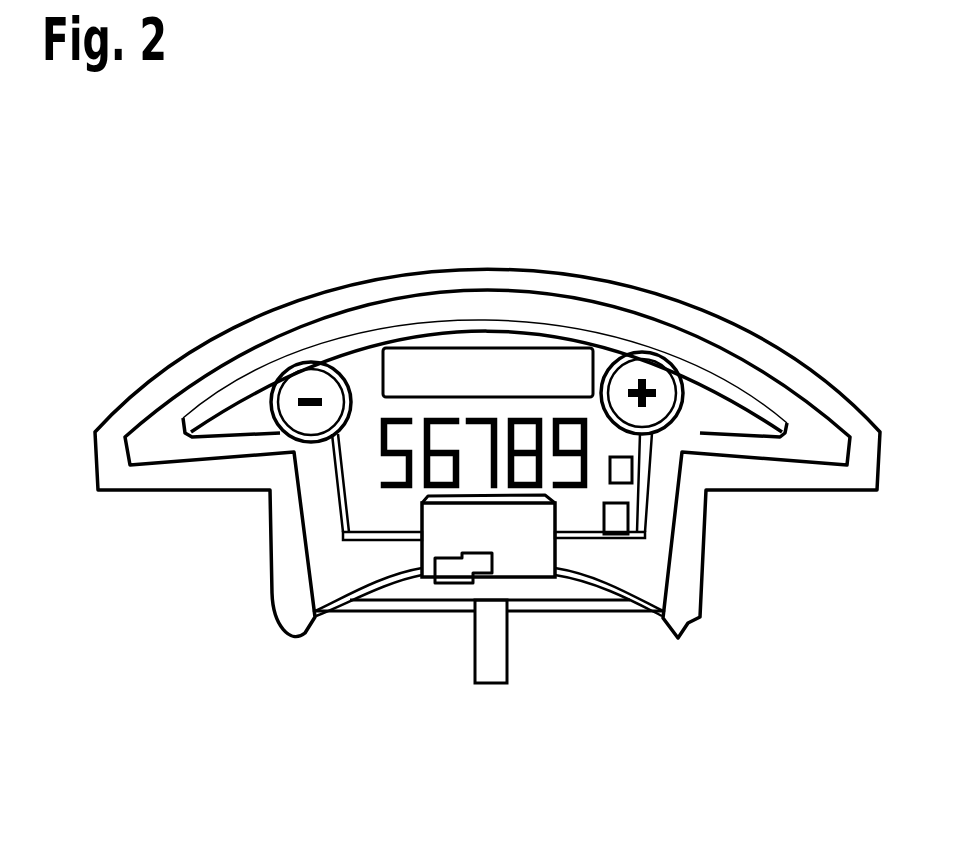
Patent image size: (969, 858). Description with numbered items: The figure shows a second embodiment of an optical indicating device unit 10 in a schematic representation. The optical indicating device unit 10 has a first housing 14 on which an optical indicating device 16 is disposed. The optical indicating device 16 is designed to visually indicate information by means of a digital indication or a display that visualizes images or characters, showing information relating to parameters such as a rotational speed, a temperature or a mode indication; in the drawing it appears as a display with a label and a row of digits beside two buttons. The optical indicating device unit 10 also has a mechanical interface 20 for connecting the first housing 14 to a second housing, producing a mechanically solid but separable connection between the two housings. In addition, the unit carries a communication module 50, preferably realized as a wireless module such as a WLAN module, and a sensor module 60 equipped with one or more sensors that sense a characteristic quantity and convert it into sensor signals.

The optical indicating device unit 10 is at (218, 232).
The first housing 14 is at (493, 287).
The optical indicating device 16 is at (567, 368).
The mechanical interface 20 is at (553, 603).
The communication module 50 is at (616, 518).
The sensor module 60 is at (620, 470).